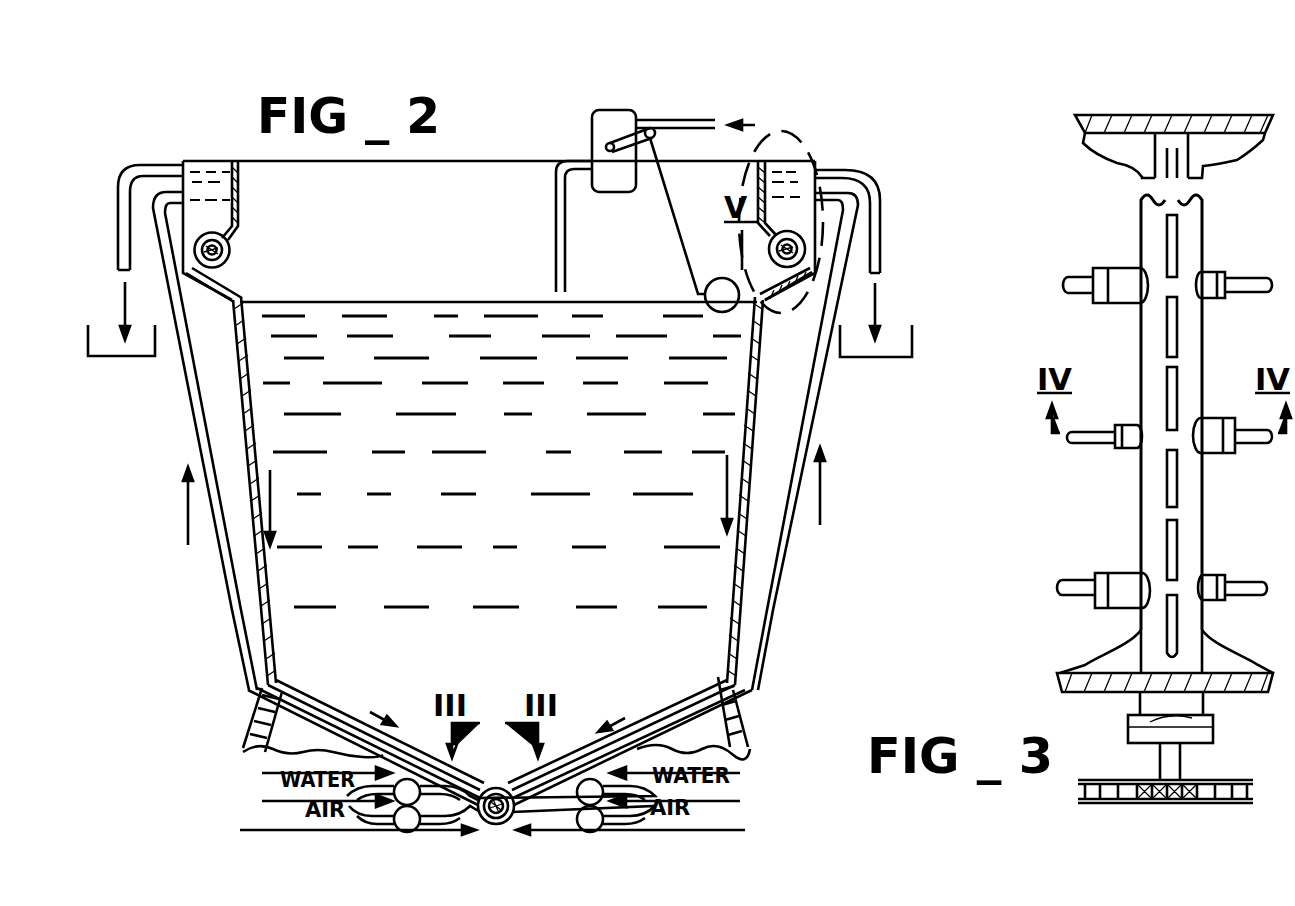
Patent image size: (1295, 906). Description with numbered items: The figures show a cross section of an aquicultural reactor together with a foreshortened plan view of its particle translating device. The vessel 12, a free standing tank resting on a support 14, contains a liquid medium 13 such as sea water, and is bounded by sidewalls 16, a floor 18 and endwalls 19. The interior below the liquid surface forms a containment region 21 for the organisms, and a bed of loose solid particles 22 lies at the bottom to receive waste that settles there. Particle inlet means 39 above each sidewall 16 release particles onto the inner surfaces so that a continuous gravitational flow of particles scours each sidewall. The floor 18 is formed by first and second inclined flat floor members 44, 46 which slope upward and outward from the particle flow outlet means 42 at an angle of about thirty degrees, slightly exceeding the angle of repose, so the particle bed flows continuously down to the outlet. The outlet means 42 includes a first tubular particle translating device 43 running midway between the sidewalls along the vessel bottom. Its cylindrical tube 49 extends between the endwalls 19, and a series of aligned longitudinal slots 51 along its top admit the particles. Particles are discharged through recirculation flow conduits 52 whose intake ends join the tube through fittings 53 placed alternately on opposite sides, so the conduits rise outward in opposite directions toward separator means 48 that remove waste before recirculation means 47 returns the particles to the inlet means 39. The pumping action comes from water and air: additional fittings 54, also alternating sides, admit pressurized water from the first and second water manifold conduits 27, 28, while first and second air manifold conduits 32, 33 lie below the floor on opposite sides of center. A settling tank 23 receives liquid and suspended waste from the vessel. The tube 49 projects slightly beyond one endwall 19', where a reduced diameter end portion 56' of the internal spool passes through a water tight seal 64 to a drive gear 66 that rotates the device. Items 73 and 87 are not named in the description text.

In FIG. 2, the vessel or reactor 12 is at (256, 569).
In FIG. 2, the liquid medium 13 is at (355, 302).
In FIG. 2, the support 14 is at (745, 724).
In FIG. 2, the sidewalls 16 is at (748, 420).
In FIG. 2, the floor 18 is at (687, 680).
In FIG. 2, the endwalls 19 is at (643, 197).
In FIG. 3, the endwalls 19 is at (1174, 105).
In FIG. 3, the endwall 19' is at (1165, 703).
In FIG. 2, the containment region 21 is at (612, 534).
In FIG. 2, the loose solid particles 22 is at (338, 675).
In FIG. 2, the settling tank 23 is at (888, 358).
In FIG. 2, the first water manifold conduit 27 is at (603, 787).
In FIG. 2, the second water manifold conduit 28 is at (393, 787).
In FIG. 2, the first air manifold conduit 32 is at (600, 817).
In FIG. 2, the second air manifold conduit 33 is at (394, 817).
In FIG. 2, the particle inlet means 39 is at (237, 240).
In FIG. 2, the particle flow outlet means 42 is at (346, 815).
In FIG. 3, the particle flow outlet means 42 is at (1112, 625).
In FIG. 2, the first tubular particle translating device 43 is at (629, 815).
In FIG. 3, the first tubular particle translating device 43 is at (1212, 350).
In FIG. 2, the first inclined flat floor member 44 is at (652, 705).
In FIG. 3, the first inclined flat floor member 44 is at (1237, 142).
In FIG. 2, the second inclined flat floor member 46 is at (395, 738).
In FIG. 3, the second inclined flat floor member 46 is at (1127, 147).
In FIG. 2, the recirculation means 47 is at (792, 572).
In FIG. 2, the separator means 48 is at (761, 181).
In FIG. 3, the cylindrical tube 49 is at (1207, 232).
In FIG. 3, the longitudinal slots 51 is at (1167, 485).
In FIG. 3, the recirculation flow conduits 52 is at (1078, 277).
In FIG. 3, the fittings 53 is at (1125, 268).
In FIG. 3, the additional fittings 54 is at (1223, 273).
In FIG. 3, the reduced diameter end portion 56' is at (1203, 761).
In FIG. 3, the water tight seal 64 is at (1222, 710).
In FIG. 3, the drive gear 66 is at (1167, 805).
In FIG. 2, the left overflow channel 73 is at (232, 255).
In FIG. 2, the right outlet pipe 87 is at (882, 213).